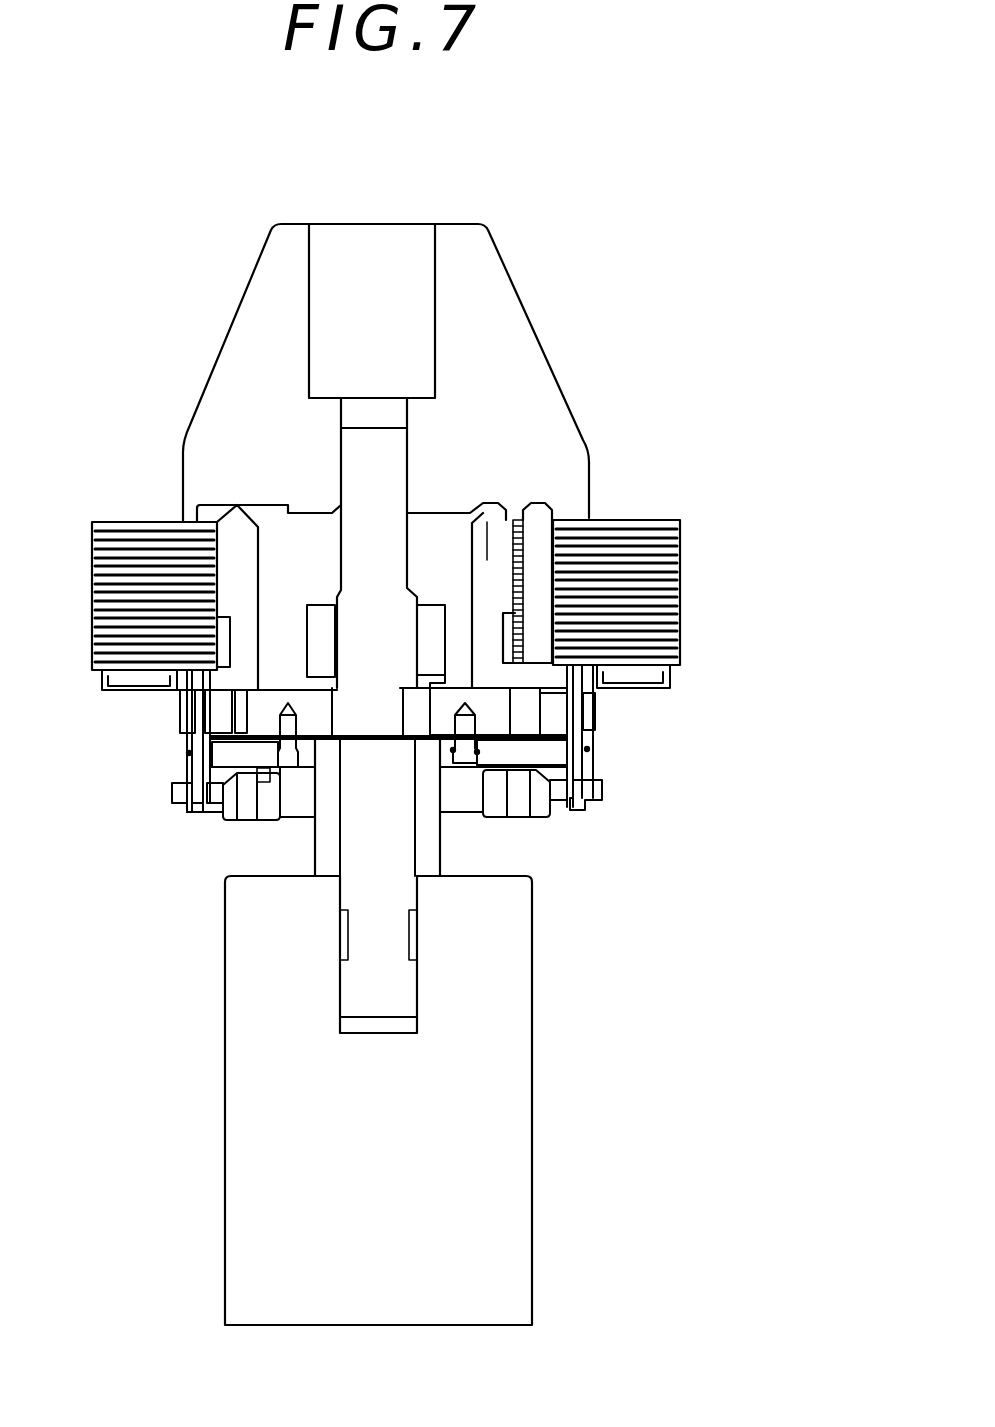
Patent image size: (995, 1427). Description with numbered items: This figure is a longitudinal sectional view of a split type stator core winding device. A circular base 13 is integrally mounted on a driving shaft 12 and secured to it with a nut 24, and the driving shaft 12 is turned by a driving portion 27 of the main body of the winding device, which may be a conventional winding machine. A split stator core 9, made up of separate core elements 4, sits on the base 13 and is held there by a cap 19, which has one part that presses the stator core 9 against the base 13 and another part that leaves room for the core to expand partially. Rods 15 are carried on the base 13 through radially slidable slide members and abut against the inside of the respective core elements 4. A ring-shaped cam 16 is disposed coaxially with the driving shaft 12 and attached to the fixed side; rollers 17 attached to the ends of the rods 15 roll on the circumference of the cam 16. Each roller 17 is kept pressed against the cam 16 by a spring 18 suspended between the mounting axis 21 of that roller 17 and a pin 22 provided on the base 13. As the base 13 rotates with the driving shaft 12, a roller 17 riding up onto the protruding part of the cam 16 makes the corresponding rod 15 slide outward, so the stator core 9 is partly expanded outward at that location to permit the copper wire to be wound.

The core element 4 is at (680, 593).
The split stator core 9 is at (443, 522).
The driving shaft 12 is at (340, 845).
The circular base 13 is at (258, 713).
The rod 15 is at (500, 555).
The ring-shaped cam 16 is at (543, 813).
The roller 17 is at (172, 788).
The spring 18 is at (550, 745).
The cap 19 is at (540, 337).
The mounting axis 21 is at (583, 768).
The pin 22 is at (465, 765).
The nut 24 is at (447, 637).
The driving portion 27 is at (531, 1058).